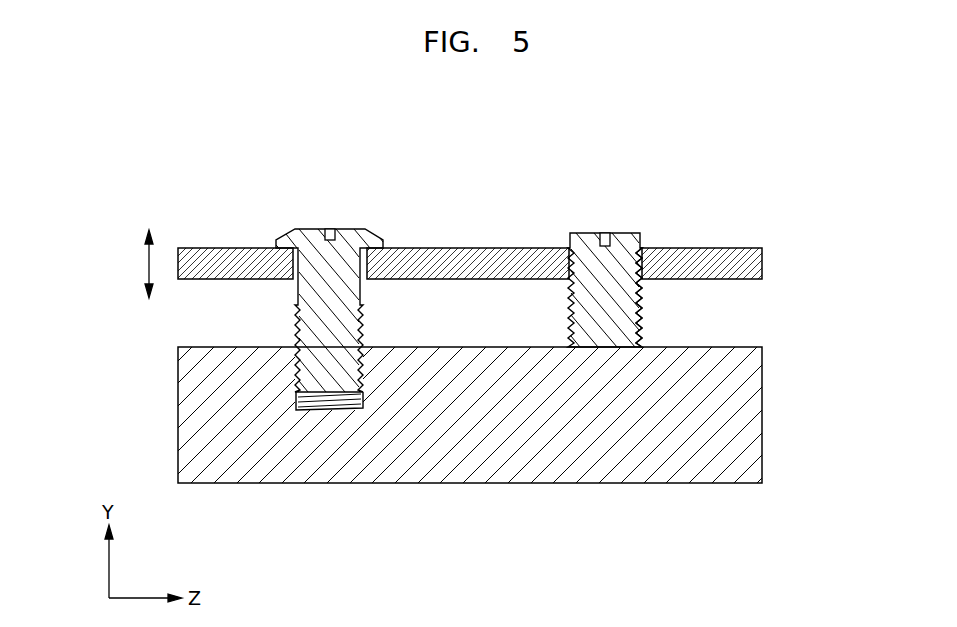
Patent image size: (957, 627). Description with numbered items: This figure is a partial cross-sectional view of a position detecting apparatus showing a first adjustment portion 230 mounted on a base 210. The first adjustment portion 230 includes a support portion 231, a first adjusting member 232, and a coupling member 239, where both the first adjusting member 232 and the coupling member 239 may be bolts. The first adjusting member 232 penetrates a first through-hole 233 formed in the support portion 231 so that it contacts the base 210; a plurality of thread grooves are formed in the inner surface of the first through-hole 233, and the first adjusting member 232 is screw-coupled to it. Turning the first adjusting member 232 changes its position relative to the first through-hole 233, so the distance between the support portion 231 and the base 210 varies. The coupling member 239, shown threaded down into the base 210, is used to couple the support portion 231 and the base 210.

The base 210 is at (750, 430).
The first adjustment portion 230 is at (733, 137).
The support portion 231 is at (727, 257).
The first adjusting member 232 is at (590, 231).
The first through-hole 233 is at (627, 282).
The coupling member 239 is at (351, 234).